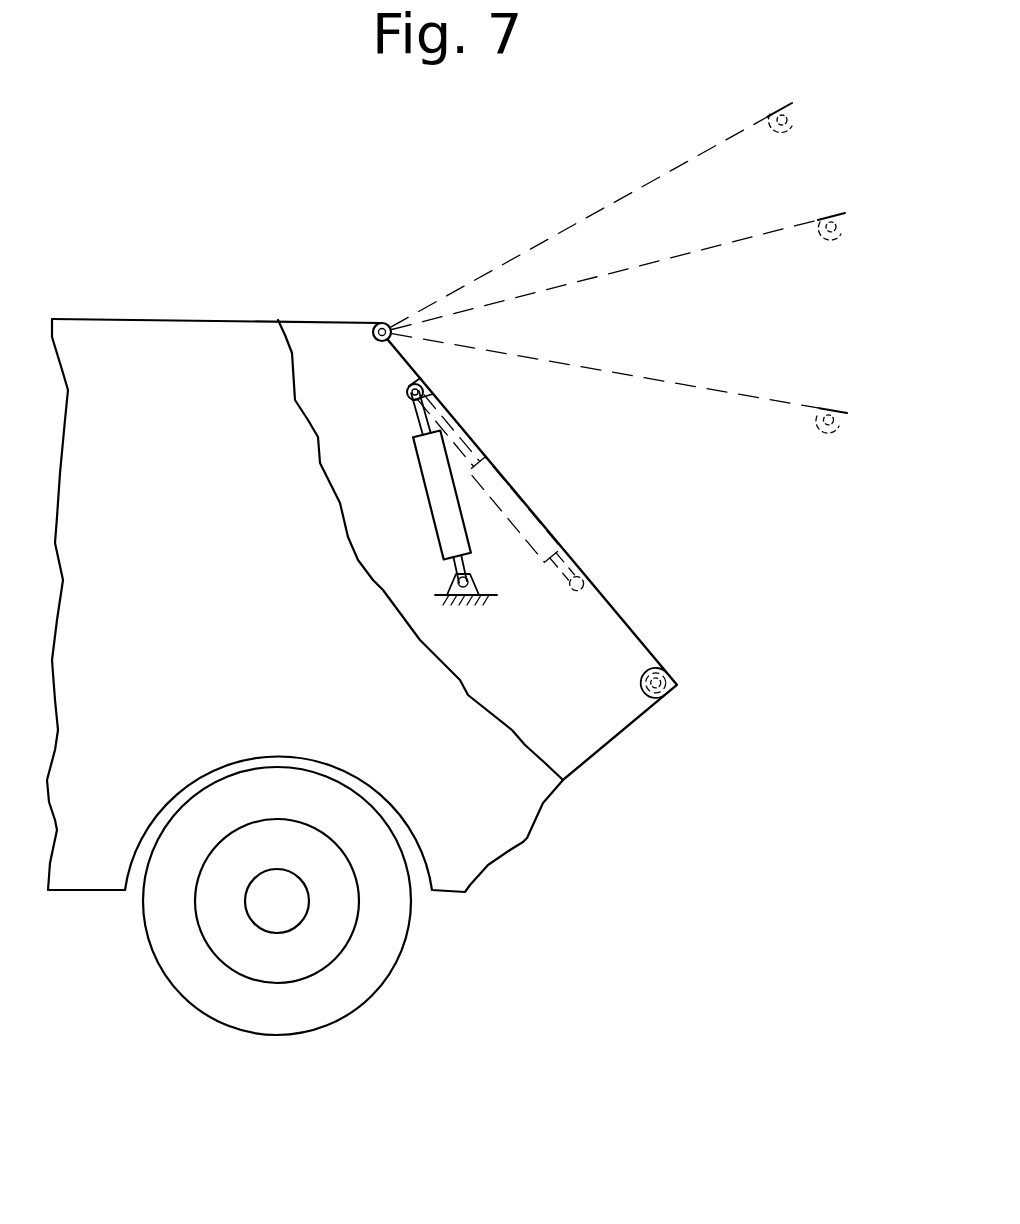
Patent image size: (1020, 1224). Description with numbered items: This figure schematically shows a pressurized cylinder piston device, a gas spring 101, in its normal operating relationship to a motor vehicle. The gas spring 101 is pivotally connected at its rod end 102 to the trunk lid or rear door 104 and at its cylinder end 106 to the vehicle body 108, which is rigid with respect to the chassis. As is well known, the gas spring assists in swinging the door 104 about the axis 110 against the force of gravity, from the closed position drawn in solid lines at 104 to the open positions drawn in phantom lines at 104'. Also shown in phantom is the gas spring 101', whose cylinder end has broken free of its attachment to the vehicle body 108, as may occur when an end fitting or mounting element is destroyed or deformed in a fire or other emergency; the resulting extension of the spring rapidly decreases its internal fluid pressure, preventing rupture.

The vehicle body 108 is at (117, 328).
The axis 110 is at (378, 322).
The rear door 104 is at (570, 560).
The open positions of rear door 104' is at (619, 268).
The rod end 102 is at (407, 389).
The gas spring 101 is at (352, 487).
The gas spring with freed cylinder end 101' is at (538, 493).
The cylinder end 106 is at (457, 585).